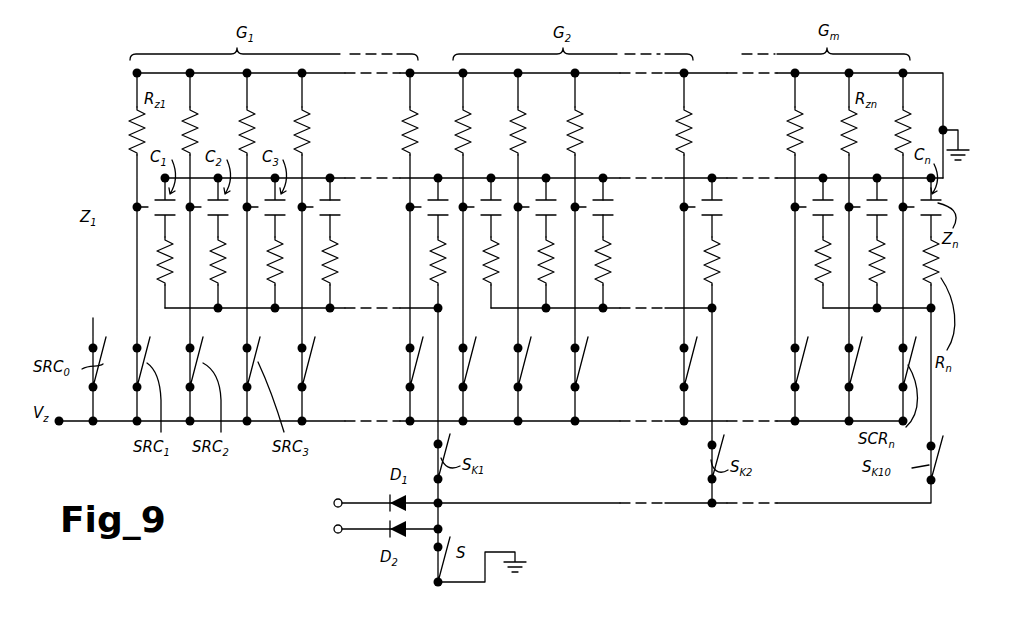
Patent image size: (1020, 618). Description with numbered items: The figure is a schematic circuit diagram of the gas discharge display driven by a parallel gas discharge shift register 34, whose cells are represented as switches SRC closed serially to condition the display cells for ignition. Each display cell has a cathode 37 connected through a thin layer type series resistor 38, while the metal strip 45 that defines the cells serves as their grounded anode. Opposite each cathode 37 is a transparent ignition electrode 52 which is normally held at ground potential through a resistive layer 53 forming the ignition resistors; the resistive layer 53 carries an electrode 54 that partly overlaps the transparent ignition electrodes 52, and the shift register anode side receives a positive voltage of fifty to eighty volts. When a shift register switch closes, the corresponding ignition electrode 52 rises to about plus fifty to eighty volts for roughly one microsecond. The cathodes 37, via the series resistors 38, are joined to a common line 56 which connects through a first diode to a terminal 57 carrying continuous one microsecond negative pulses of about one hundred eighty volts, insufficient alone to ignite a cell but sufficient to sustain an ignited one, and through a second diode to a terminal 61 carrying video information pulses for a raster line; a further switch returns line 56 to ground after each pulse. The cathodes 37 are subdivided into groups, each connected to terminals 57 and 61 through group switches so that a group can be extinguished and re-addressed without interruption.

The gas discharge shift register 34 is at (69, 372).
The cathodes 37 is at (341, 218).
The thin layer type resistors 38 is at (338, 268).
The metal strip 45 is at (341, 200).
The transparent ignition electrodes 52 is at (134, 206).
The resistive layer 53 is at (130, 134).
The electrode 54 is at (140, 288).
The line 56 is at (866, 506).
The terminal 57 is at (334, 503).
The terminal 61 is at (334, 530).